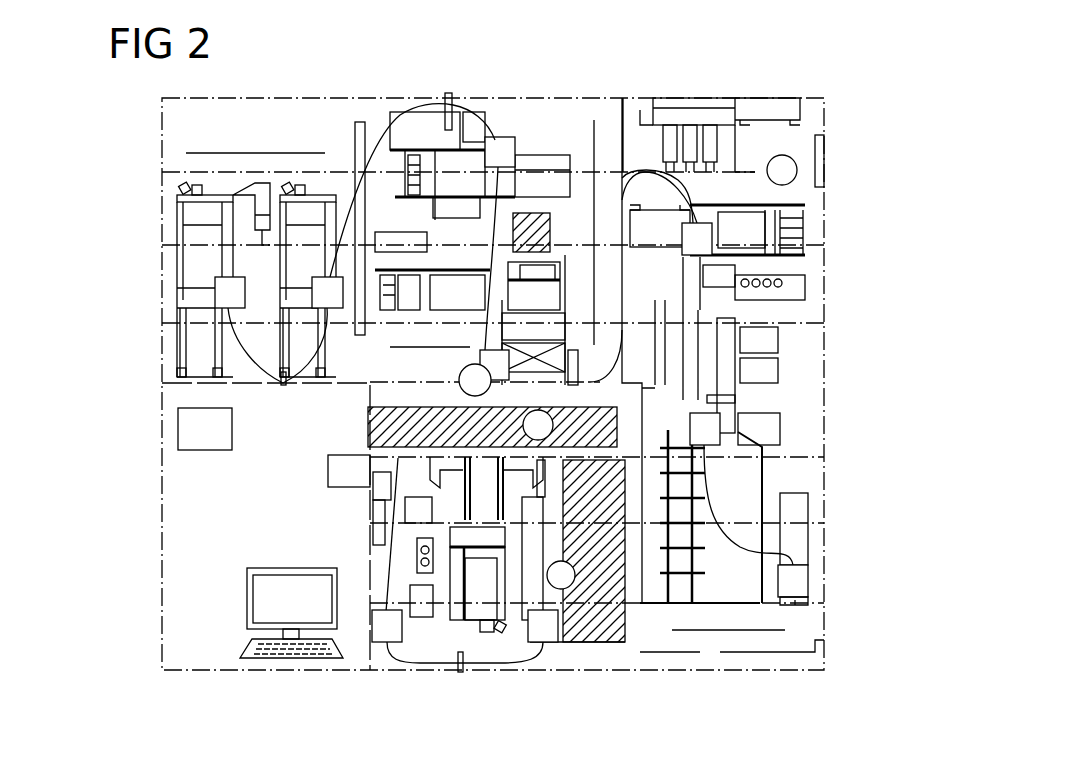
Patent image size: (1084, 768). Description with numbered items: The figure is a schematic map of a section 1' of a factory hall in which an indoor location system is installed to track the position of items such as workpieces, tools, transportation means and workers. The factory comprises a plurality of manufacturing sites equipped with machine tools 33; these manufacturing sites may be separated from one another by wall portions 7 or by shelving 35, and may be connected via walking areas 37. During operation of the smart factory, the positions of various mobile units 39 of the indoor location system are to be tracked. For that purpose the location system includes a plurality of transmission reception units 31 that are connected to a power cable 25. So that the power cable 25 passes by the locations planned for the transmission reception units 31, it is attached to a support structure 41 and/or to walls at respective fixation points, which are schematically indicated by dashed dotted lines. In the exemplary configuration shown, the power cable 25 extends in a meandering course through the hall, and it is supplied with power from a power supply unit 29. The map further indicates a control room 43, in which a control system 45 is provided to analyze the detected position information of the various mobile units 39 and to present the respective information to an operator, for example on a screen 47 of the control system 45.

The section of a hall 1' is at (501, 344).
The wall portion 7 is at (200, 145).
The power cable 25 is at (618, 200).
The power supply unit 29 is at (328, 477).
The transmission reception unit 31 is at (512, 388).
The machine tool 33 is at (280, 250).
The shelving 35 is at (360, 122).
The walking area 37 is at (360, 431).
The mobile unit 39 is at (506, 396).
The support structure 41 is at (228, 172).
The control room 43 is at (172, 534).
The control system 45 is at (232, 442).
The screen 47 is at (300, 568).